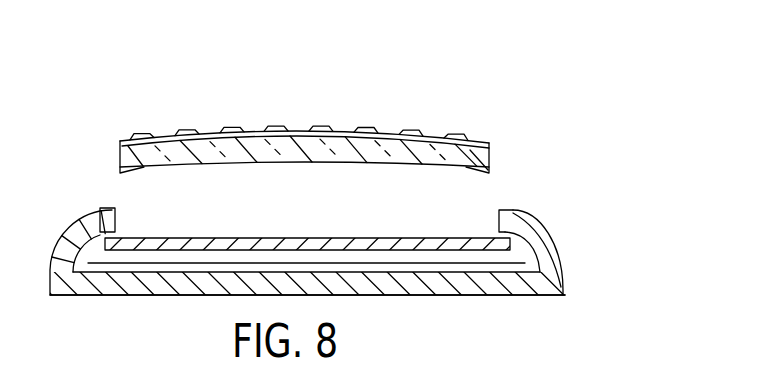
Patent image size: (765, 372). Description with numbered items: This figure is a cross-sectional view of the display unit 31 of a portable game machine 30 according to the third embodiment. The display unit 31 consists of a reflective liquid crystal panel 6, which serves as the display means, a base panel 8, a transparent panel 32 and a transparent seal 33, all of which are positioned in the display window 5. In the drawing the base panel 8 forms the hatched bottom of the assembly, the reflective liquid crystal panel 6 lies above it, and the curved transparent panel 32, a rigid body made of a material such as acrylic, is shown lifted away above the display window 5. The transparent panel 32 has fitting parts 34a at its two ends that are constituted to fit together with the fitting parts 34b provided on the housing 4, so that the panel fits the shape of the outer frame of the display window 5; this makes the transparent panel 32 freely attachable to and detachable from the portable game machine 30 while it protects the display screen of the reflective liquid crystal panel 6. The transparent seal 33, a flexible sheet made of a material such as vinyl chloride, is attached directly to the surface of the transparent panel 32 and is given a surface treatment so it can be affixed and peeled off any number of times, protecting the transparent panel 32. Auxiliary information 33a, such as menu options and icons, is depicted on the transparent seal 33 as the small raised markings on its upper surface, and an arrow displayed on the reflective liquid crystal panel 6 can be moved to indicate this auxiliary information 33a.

The portable game machine 30 is at (477, 99).
The display unit 31 is at (622, 189).
The transparent panel 32 is at (470, 157).
The transparent seal 33 is at (125, 143).
The auxiliary information 33a is at (184, 129).
The fitting parts 34a is at (119, 165).
The fitting parts 34b is at (115, 213).
The housing 4 is at (563, 281).
The display window 5 is at (310, 228).
The reflective liquid crystal panel 6 is at (443, 241).
The base panel 8 is at (513, 272).